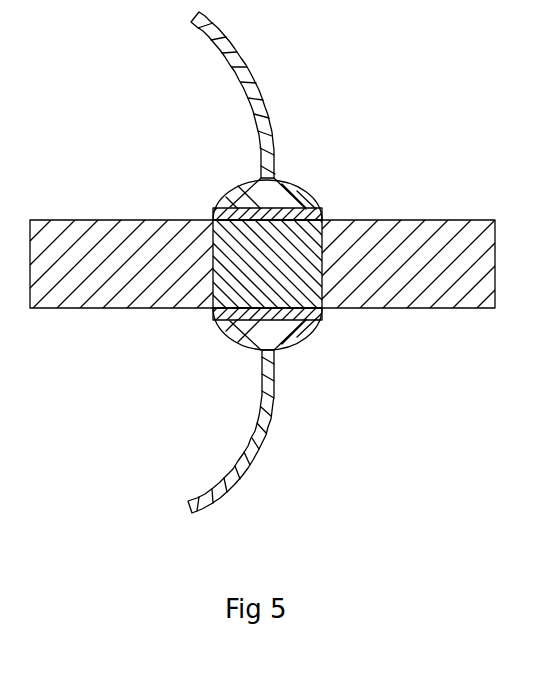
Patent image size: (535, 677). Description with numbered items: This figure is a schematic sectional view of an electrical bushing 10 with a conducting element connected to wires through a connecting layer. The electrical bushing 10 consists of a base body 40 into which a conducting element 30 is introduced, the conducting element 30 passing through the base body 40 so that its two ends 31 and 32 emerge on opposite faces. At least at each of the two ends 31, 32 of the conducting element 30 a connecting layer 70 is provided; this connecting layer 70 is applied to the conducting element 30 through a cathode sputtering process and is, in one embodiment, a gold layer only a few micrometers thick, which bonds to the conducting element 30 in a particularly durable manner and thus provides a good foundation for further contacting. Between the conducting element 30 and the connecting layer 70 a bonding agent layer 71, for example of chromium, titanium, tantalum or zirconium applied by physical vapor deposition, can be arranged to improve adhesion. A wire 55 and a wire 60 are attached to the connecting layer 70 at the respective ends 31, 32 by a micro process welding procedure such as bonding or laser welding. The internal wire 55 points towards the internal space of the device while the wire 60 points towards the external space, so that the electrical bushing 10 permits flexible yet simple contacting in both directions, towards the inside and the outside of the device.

The electrical bushing 10 is at (124, 198).
The conducting element 30 is at (287, 270).
The end of the conducting element 31 is at (218, 212).
The end of the conducting element 32 is at (232, 326).
The base body 40 is at (426, 250).
The internal wire 55 is at (250, 468).
The wire 60 is at (256, 81).
The connecting layer 70 is at (290, 202).
The bonding agent layer 71 is at (318, 213).